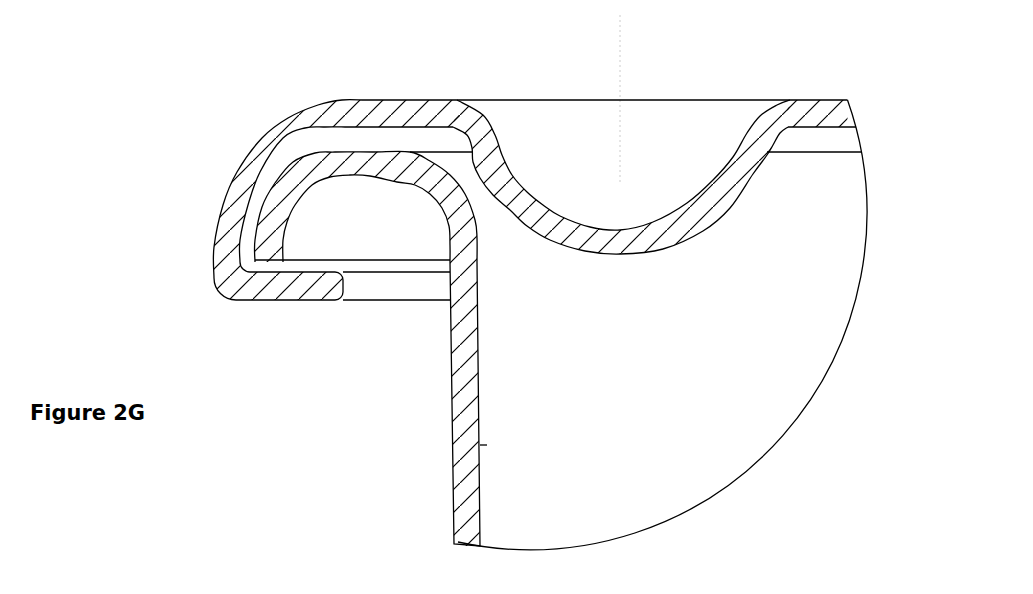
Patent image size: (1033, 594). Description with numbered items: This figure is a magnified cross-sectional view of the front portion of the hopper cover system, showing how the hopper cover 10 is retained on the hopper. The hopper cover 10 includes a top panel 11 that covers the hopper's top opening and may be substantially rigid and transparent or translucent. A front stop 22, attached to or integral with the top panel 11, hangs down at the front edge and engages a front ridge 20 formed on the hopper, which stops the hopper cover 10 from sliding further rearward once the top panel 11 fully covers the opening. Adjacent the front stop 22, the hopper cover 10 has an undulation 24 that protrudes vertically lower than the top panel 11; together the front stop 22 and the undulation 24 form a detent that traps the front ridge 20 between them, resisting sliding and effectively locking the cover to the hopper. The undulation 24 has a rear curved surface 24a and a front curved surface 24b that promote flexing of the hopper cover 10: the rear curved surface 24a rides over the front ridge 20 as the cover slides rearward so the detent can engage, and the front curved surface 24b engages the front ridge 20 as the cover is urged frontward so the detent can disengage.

The hopper cover 10 is at (417, 110).
The top panel 11 is at (813, 113).
The front ridge 20 is at (363, 173).
The front stop 22 is at (227, 290).
The undulation 24 is at (617, 243).
The rear curved surface 24a is at (742, 183).
The front curved surface 24b is at (528, 217).